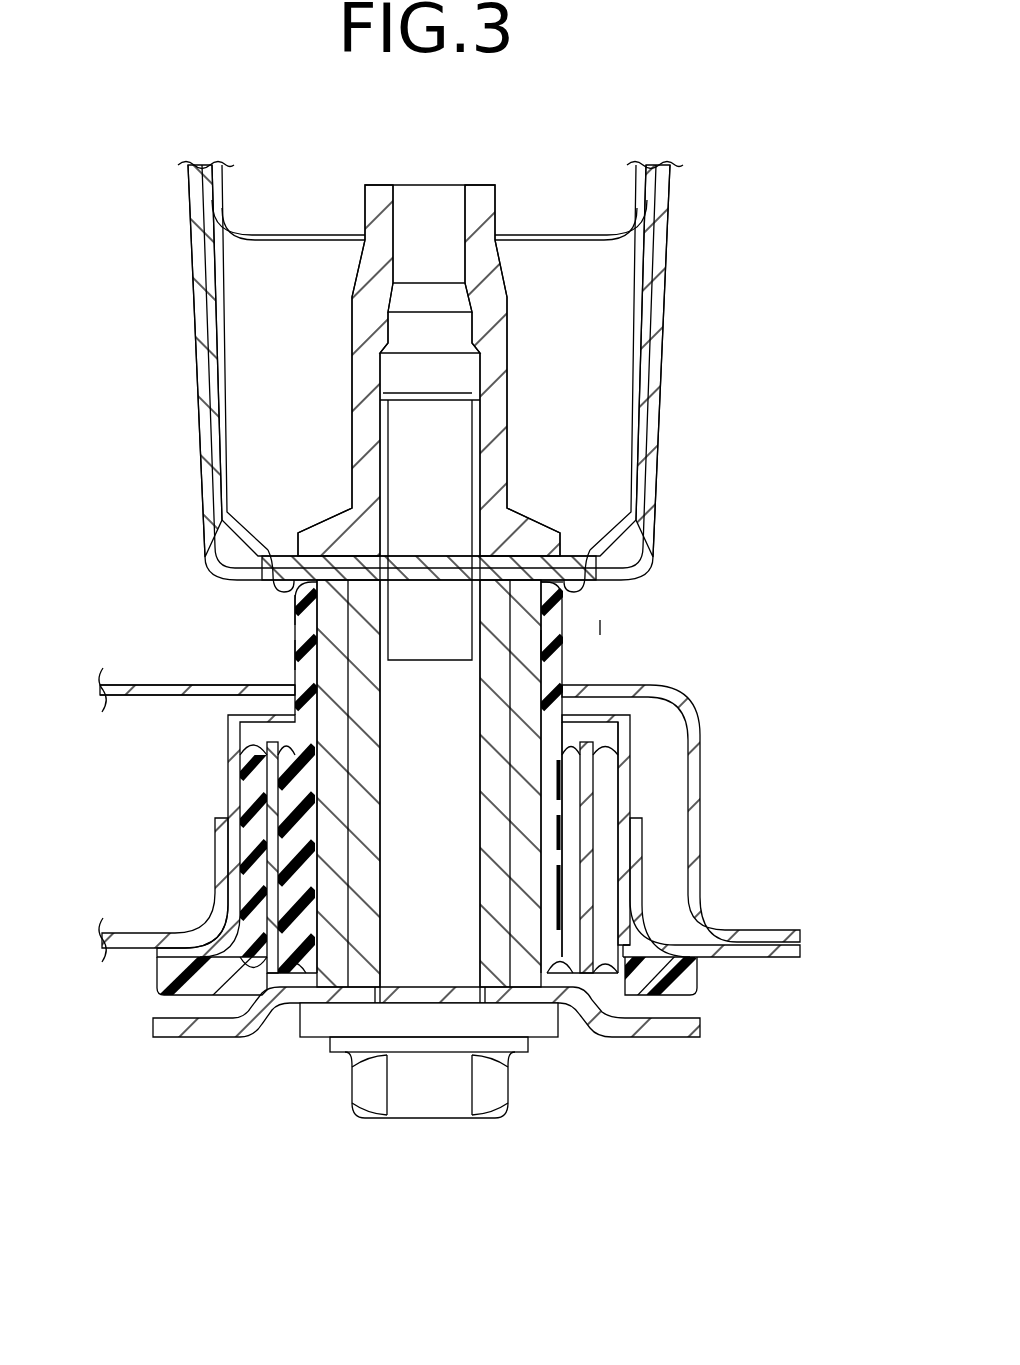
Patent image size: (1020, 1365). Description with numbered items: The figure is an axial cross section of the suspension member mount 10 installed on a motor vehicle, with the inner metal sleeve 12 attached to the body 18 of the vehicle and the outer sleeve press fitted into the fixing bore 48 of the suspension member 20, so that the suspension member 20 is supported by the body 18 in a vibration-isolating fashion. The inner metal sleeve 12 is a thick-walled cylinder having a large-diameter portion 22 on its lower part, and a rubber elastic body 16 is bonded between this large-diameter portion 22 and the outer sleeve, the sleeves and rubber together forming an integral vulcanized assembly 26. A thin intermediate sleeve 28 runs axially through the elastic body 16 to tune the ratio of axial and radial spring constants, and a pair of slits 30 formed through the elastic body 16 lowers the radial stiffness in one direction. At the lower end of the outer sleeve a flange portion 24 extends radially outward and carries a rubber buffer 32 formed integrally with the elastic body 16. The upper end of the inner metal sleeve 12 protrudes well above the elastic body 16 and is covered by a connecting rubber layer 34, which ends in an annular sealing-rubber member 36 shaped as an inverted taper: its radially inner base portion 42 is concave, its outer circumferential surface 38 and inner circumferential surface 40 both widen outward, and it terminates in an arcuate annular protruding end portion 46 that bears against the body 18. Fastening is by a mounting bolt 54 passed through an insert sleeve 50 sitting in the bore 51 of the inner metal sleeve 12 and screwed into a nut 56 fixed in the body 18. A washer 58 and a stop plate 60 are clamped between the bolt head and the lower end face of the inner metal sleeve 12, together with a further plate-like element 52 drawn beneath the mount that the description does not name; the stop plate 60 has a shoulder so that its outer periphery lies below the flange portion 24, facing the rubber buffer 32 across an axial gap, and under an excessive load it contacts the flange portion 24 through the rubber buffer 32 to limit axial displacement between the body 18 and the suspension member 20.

The suspension member mount 10 is at (622, 627).
The inner metal sleeve 12 is at (238, 720).
The elastic body 16 is at (253, 878).
The body 18 is at (686, 317).
The suspension member 20 is at (710, 770).
The large-diameter portion 22 is at (318, 848).
The flange portion 24 is at (153, 952).
The integral vulcanized assembly 26 is at (292, 653).
The intermediate sleeve 28 is at (228, 795).
The slits 30 is at (562, 955).
The rubber buffer 32 is at (688, 980).
The connecting rubber layer 34 is at (553, 643).
The annular sealing-rubber member 36 is at (286, 608).
The outer circumferential surface 38 is at (272, 552).
The inner circumferential surface 40 is at (304, 582).
The radially inner base portion 42 is at (552, 585).
The annular protruding end portion 46 is at (566, 590).
The fixing bore 48 is at (655, 937).
The insert sleeve 50 is at (497, 928).
The bore 51 is at (540, 978).
The washer 52 is at (400, 1017).
The mounting bolt 54 is at (430, 578).
The nut 56 is at (492, 358).
The washer 58 is at (378, 1020).
The stop plate 60 is at (195, 1030).